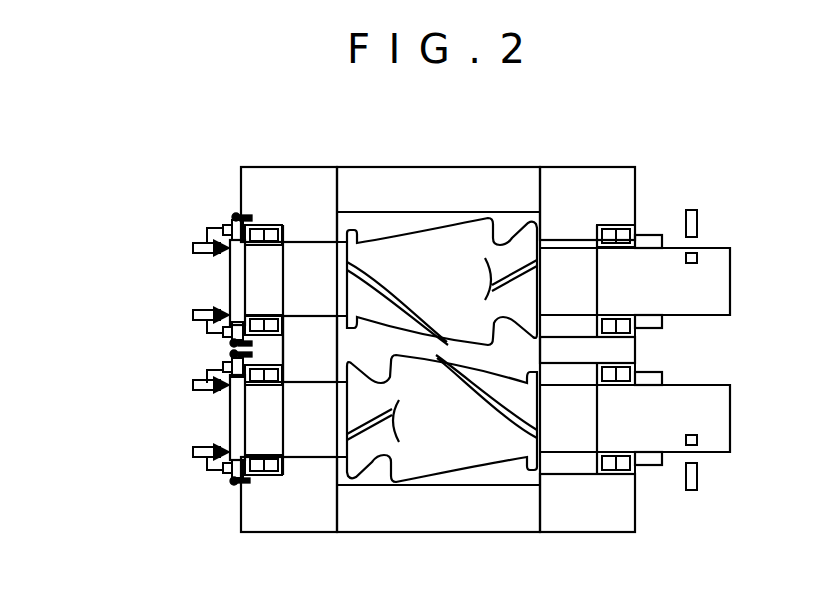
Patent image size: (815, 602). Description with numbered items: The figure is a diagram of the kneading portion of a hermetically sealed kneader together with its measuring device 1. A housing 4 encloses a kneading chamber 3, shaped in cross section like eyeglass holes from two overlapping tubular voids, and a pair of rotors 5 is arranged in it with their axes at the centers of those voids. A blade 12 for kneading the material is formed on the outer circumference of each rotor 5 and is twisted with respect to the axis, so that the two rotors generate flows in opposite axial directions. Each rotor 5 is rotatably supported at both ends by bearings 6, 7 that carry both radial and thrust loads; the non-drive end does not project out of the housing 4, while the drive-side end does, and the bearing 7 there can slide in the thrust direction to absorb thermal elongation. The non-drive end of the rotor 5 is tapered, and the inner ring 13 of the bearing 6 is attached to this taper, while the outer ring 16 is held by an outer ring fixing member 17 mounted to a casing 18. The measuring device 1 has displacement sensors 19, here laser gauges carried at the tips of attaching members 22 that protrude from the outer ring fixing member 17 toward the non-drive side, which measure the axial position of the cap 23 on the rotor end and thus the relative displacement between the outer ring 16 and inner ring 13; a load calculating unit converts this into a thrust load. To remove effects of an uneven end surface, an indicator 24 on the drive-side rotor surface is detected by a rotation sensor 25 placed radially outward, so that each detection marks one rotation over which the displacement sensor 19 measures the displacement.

The measuring device 1 is at (170, 154).
The kneading chamber 3 is at (508, 228).
The housing 4 is at (414, 176).
The rotor 5 is at (716, 285).
The bearing 6 is at (277, 202).
The bearing 7 is at (637, 226).
The blade 12 is at (469, 218).
The inner ring 13 is at (265, 313).
The outer ring 16 is at (285, 230).
The outer ring fixing member 17 is at (239, 212).
The casing 18 is at (253, 177).
The displacement sensor 19 is at (197, 243).
The attaching member 22 is at (215, 228).
The cap 23 is at (235, 270).
The indicator 24 is at (699, 258).
The rotation sensor 25 is at (697, 222).